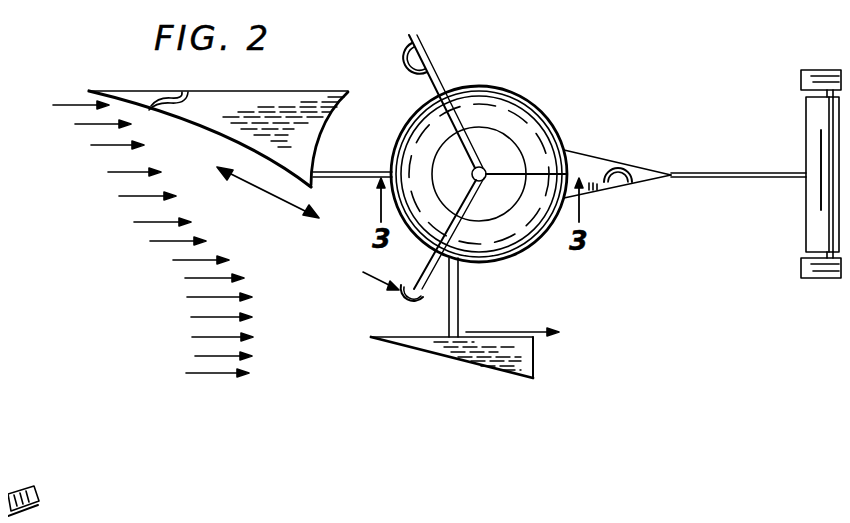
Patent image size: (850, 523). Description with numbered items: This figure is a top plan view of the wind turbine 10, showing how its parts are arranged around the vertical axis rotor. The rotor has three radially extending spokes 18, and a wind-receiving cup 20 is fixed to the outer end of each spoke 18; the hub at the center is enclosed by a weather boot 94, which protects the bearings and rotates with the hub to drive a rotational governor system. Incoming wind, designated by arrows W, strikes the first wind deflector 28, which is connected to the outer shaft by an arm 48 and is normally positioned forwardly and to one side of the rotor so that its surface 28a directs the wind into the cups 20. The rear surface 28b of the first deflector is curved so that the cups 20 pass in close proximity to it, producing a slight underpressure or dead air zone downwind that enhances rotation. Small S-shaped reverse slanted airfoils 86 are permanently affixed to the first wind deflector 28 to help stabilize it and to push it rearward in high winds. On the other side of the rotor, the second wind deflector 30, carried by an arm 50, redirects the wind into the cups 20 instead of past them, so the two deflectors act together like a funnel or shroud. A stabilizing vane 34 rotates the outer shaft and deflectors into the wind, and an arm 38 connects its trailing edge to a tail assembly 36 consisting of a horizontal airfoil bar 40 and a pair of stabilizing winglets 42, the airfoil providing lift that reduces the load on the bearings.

The wind turbine 10 is at (696, 303).
The spokes 18 is at (440, 73).
The wind-receiving cup 20 is at (407, 37).
The first wind deflector 28 is at (246, 88).
The surface 28a is at (213, 138).
The rear surface 28b is at (324, 128).
The second wind deflector 30 is at (467, 365).
The stabilizing vane 34 is at (590, 160).
The tail assembly 36 is at (793, 214).
The arm 38 is at (718, 178).
The horizontal bar 40 is at (815, 136).
The stabilizing winglets 42 is at (828, 70).
The arm 48 is at (334, 180).
The arm 50 is at (462, 306).
The small airfoil 86 is at (156, 97).
The weather boot 94 is at (513, 246).
The wind W is at (215, 375).